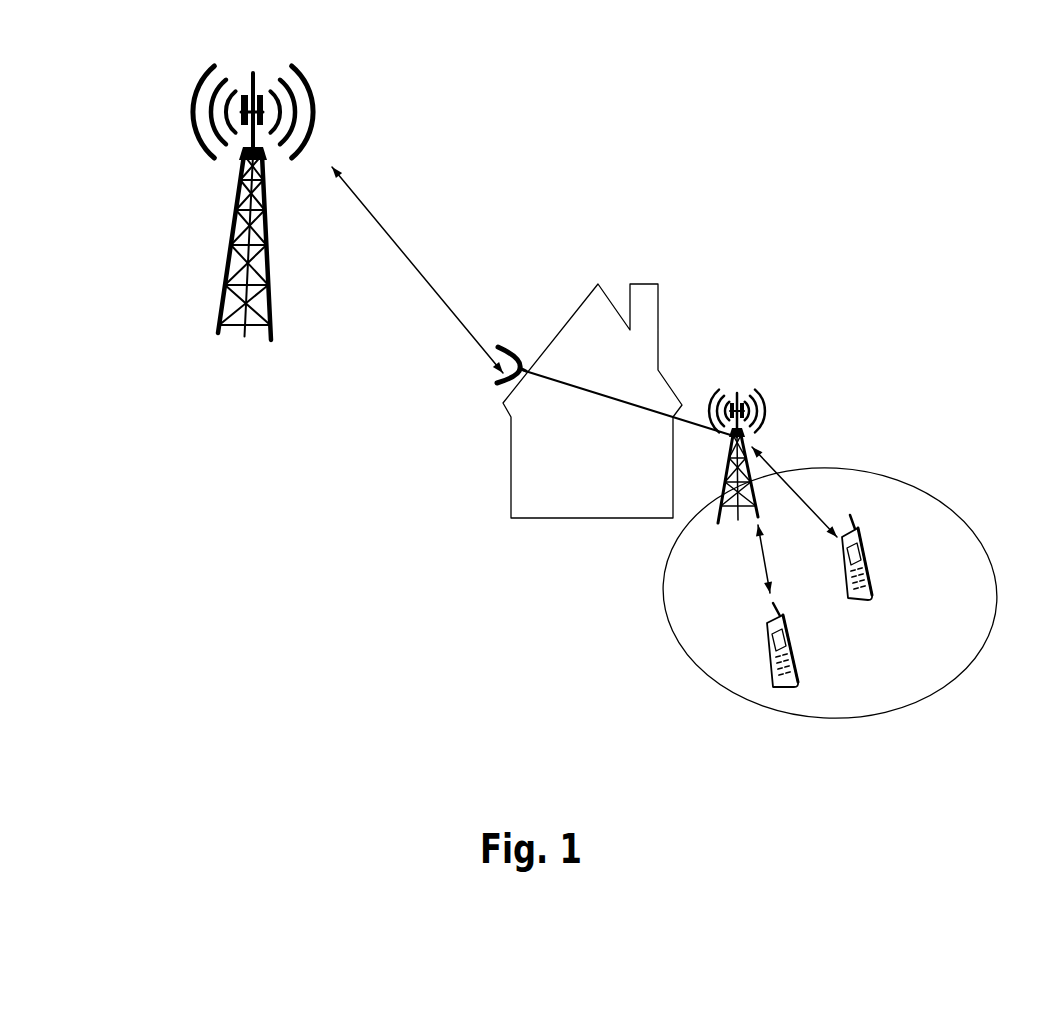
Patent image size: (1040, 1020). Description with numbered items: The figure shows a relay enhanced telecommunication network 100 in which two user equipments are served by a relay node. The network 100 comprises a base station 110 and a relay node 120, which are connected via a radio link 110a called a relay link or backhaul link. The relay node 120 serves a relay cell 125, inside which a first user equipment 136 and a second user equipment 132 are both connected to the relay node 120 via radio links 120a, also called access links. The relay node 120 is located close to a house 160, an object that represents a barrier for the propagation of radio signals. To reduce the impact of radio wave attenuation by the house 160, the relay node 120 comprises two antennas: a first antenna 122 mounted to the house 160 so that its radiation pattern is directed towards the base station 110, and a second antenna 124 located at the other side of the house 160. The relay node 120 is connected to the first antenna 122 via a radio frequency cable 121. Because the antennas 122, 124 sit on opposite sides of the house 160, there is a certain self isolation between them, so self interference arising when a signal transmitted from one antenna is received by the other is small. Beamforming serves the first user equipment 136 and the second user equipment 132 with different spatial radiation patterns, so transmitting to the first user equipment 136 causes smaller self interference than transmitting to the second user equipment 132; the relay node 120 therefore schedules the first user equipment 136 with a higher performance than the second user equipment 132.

The relay enhanced telecommunication network 100 is at (940, 132).
The base station 110 is at (228, 262).
The radio link 110a is at (415, 265).
The first antenna 122 is at (513, 350).
The house 160 is at (673, 390).
The radio frequency cable 121 is at (603, 395).
The second antenna 124 is at (738, 393).
The relay node 120 is at (725, 460).
The radio links 120a is at (805, 495).
The relay cell 125 is at (918, 488).
The first user equipment 136 is at (872, 563).
The second user equipment 132 is at (798, 658).